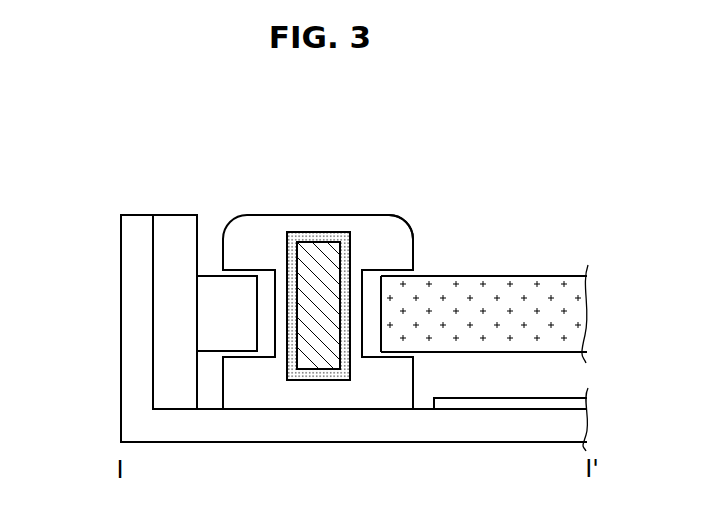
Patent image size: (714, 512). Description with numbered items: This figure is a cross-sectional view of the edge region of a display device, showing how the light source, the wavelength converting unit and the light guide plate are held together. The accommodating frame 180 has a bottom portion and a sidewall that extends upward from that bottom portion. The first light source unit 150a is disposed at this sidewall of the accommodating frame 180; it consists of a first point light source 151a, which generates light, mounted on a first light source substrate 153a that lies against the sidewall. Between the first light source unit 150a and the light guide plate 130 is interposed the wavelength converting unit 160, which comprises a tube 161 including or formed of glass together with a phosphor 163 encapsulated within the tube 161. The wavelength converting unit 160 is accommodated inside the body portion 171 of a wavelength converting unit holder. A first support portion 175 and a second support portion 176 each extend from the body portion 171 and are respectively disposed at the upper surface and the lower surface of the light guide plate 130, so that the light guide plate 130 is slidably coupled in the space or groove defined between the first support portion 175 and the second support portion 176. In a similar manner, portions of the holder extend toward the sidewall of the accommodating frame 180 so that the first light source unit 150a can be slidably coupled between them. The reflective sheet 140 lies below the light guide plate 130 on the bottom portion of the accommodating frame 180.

The light guide plate 130 is at (495, 307).
The reflective sheet 140 is at (505, 403).
The first light source unit 150a is at (153, 148).
The first point light source 151a is at (215, 292).
The first light source substrate 153a is at (176, 229).
The wavelength converting unit 160 is at (293, 148).
The tube 161 is at (332, 236).
The phosphor 163 is at (315, 254).
The body portion 171 is at (315, 395).
The first support portion 175 is at (378, 246).
The second support portion 176 is at (382, 388).
The accommodating frame 180 is at (137, 330).